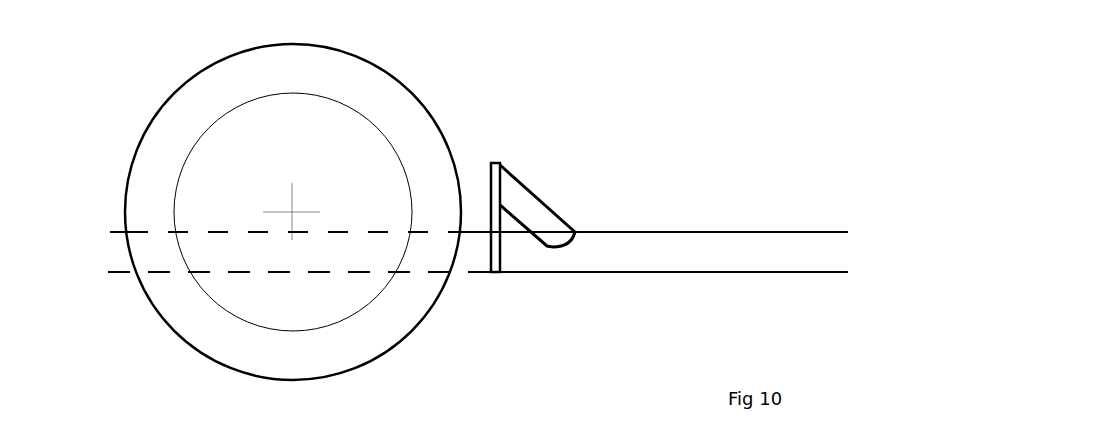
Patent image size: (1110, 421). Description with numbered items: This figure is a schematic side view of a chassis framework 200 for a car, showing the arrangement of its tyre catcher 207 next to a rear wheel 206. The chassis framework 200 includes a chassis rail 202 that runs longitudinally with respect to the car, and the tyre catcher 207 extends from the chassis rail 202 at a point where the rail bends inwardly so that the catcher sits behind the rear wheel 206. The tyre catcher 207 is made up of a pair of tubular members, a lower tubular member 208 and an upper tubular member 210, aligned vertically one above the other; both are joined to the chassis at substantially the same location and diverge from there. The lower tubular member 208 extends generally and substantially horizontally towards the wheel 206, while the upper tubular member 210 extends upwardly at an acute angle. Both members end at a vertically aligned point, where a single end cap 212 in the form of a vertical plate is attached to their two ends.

The chassis framework 200 is at (683, 227).
The chassis rail 202 is at (612, 265).
The rear wheel 206 is at (192, 332).
The tyre catcher 207 is at (517, 170).
The lower tubular member 208 is at (512, 259).
The upper tubular member 210 is at (545, 195).
The end cap 212 is at (491, 216).